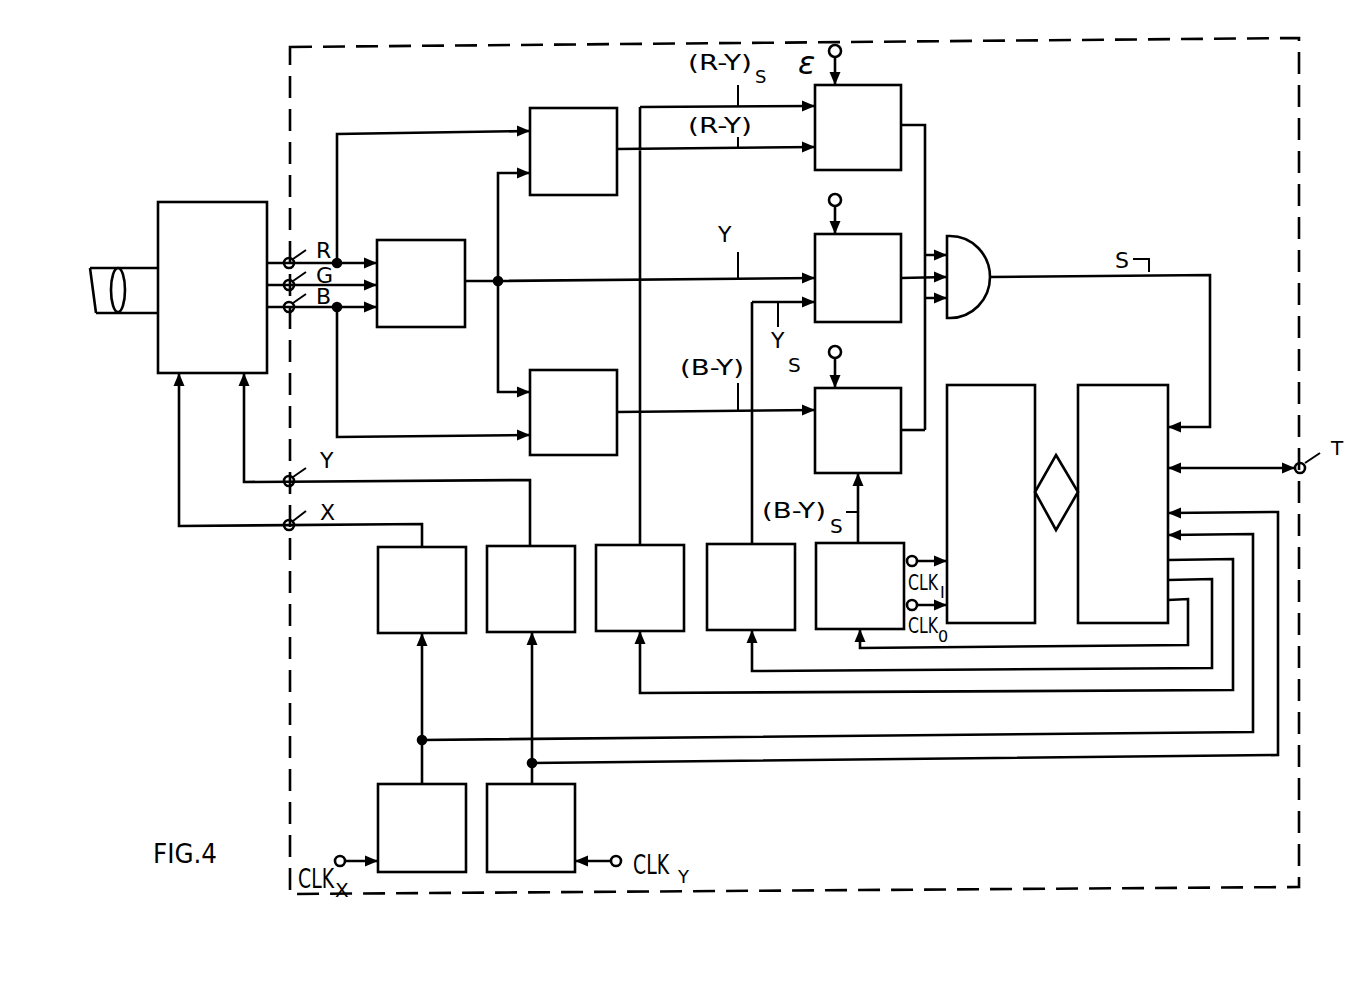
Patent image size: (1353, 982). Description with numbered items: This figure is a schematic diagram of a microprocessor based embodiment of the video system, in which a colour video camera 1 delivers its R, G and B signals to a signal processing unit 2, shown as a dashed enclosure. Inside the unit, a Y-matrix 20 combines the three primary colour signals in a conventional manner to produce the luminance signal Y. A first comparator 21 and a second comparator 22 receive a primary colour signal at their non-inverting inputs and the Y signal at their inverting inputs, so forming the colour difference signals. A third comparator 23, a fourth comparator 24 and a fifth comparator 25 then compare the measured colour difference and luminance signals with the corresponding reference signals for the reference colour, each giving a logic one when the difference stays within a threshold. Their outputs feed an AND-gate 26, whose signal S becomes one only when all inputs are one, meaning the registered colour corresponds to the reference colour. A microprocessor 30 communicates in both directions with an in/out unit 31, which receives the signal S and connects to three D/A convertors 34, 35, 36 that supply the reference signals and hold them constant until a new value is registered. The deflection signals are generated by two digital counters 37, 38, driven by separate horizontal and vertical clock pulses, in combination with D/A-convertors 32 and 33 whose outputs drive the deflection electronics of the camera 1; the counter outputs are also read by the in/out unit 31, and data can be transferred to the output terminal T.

The colour video camera 1 is at (178, 202).
The signal processing unit 2 is at (291, 68).
The Y-matrix 20 is at (397, 240).
The first comparator 21 is at (551, 108).
The second comparator 22 is at (553, 370).
The third comparator 23 is at (865, 85).
The fourth comparator 24 is at (852, 388).
The fifth comparator 25 is at (862, 213).
The AND-gate 26 is at (988, 262).
The microprocessor 30 is at (1012, 385).
The in/out unit 31 is at (1144, 385).
The D/A-convertor 32 is at (397, 633).
The D/A-convertor 33 is at (510, 632).
The D/A convertor 34 is at (620, 631).
The D/A convertor 35 is at (730, 630).
The D/A convertor 36 is at (838, 629).
The digital counter 37 is at (378, 807).
The digital counter 38 is at (575, 803).